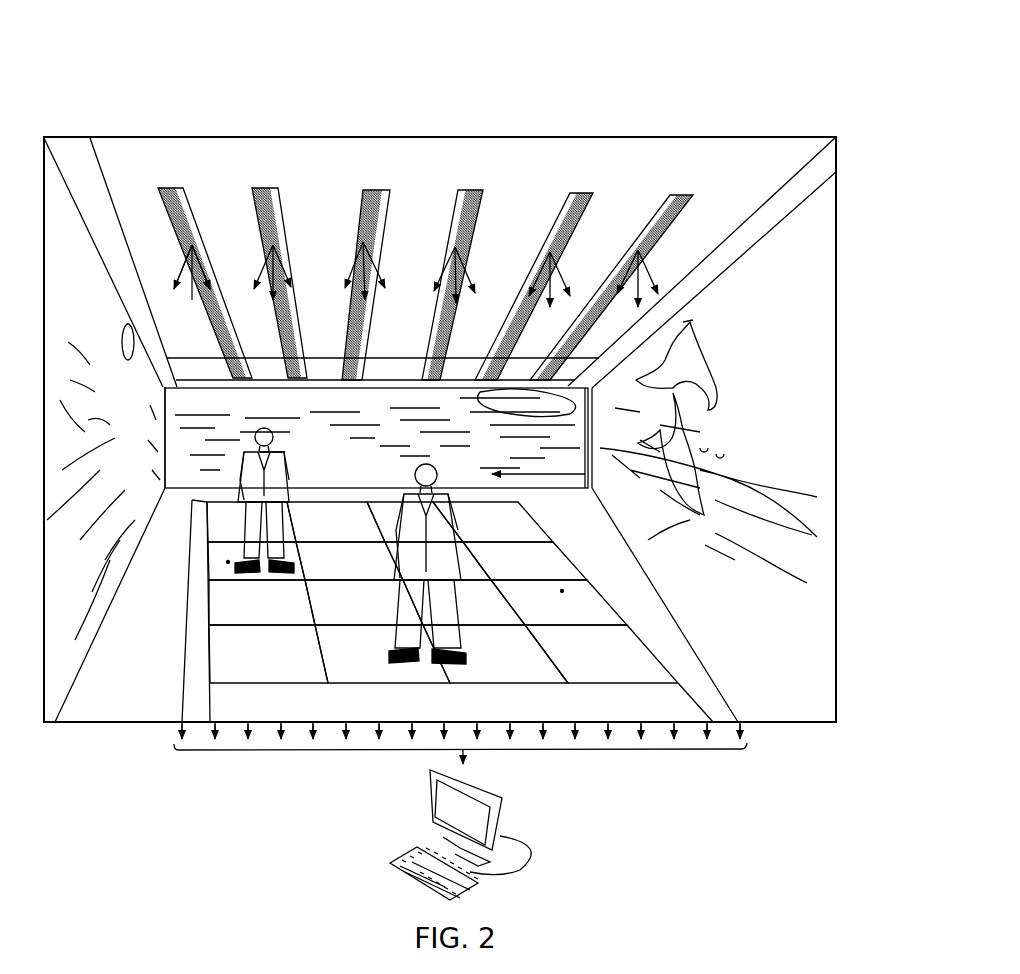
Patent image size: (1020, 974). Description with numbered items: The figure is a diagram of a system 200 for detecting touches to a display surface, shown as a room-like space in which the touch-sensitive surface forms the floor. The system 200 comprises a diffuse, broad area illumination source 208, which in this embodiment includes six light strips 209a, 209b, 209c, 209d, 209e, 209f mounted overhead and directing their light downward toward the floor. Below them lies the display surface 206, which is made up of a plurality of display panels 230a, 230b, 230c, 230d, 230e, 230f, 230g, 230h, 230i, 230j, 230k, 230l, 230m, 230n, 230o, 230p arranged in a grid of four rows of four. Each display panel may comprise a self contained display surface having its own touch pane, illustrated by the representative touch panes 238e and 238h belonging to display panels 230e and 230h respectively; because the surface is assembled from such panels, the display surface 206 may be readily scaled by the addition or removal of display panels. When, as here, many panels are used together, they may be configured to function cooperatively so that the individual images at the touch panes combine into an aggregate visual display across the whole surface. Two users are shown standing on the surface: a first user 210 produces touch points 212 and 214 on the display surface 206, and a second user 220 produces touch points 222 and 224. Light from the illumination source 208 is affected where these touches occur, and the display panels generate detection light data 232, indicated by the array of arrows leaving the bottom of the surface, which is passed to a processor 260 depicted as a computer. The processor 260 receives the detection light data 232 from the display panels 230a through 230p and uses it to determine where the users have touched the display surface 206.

The system 200 is at (651, 54).
The display surface 206 is at (640, 510).
The illumination source 208 is at (735, 165).
The light strip 209a is at (177, 190).
The light strip 209b is at (265, 190).
The light strip 209c is at (378, 192).
The light strip 209d is at (472, 192).
The light strip 209e is at (582, 194).
The light strip 209f is at (681, 196).
The user 210 is at (272, 441).
The touch point 212 is at (234, 580).
The touch point 214 is at (266, 579).
The user 220 is at (513, 459).
The touch point 222 is at (413, 662).
The touch point 224 is at (458, 672).
The display panel 230a is at (228, 518).
The display panel 230b is at (311, 533).
The display panel 230c is at (388, 513).
The display panel 230d is at (470, 539).
The display panel 230e is at (228, 551).
The display panel 230f is at (312, 568).
The display panel 230g is at (463, 550).
The display panel 230h is at (508, 576).
The display panel 230i is at (252, 618).
The display panel 230j is at (320, 616).
The display panel 230k is at (483, 613).
The display panel 230l is at (541, 618).
The display panel 230m is at (240, 671).
The display panel 230n is at (348, 672).
The display panel 230o is at (525, 672).
The display panel 230p is at (577, 671).
The detection light data 232 is at (467, 764).
The touch pane 238e is at (216, 561).
The touch pane 238h is at (572, 590).
The processor 260 is at (428, 807).